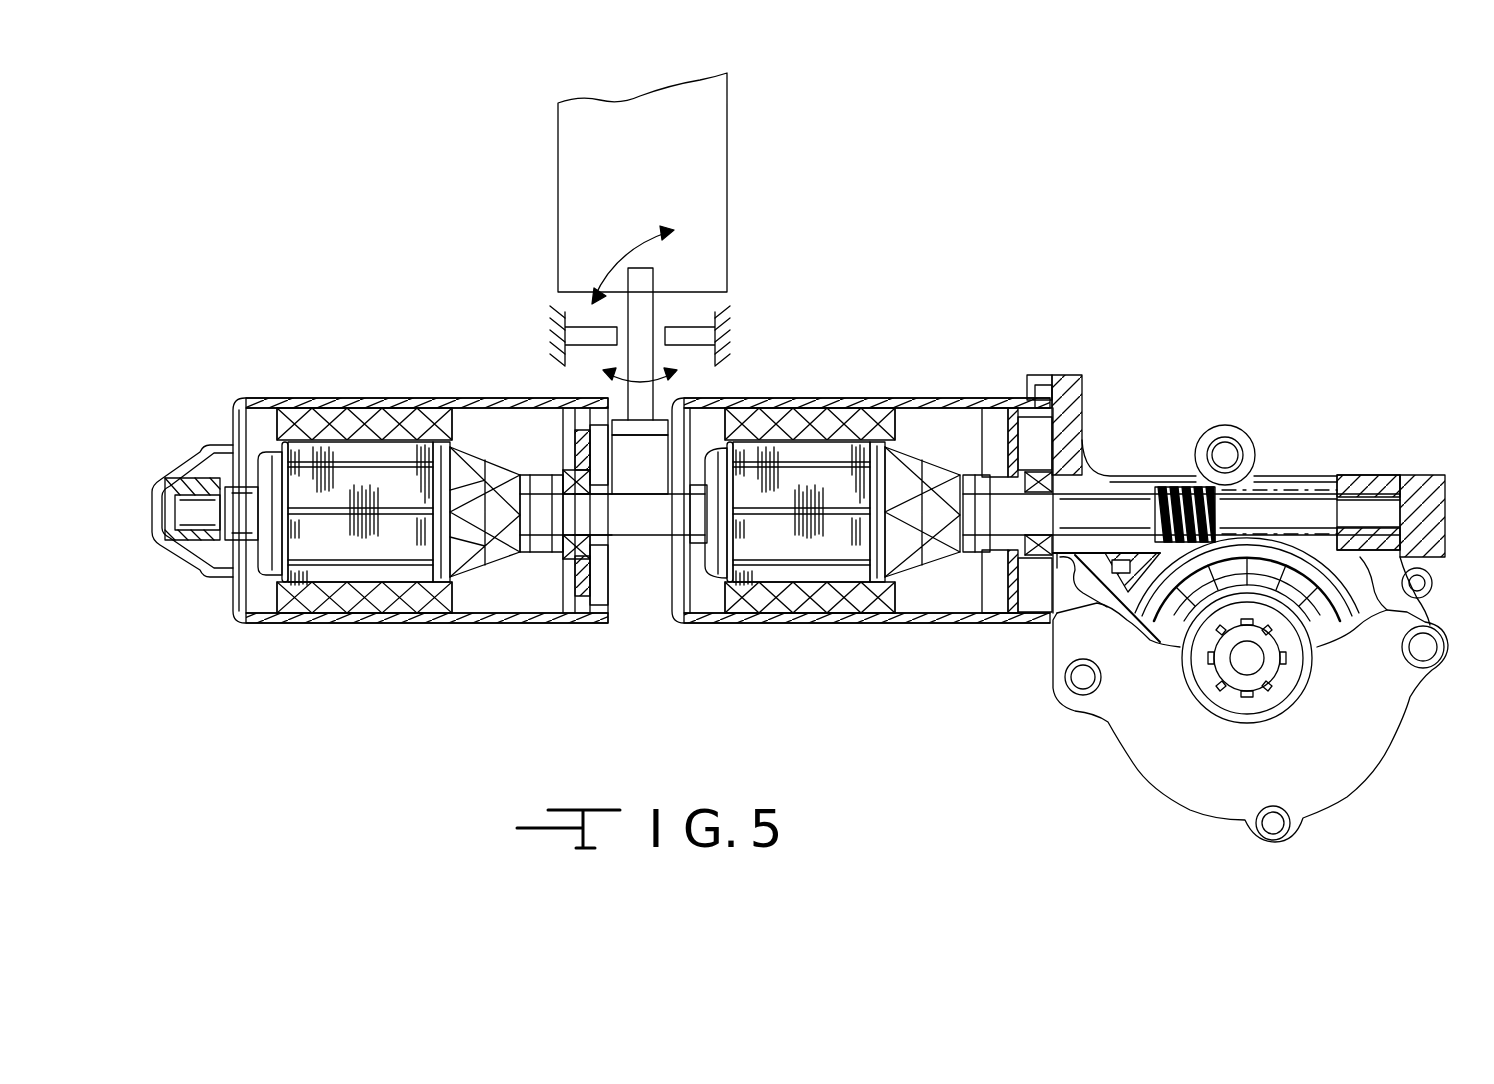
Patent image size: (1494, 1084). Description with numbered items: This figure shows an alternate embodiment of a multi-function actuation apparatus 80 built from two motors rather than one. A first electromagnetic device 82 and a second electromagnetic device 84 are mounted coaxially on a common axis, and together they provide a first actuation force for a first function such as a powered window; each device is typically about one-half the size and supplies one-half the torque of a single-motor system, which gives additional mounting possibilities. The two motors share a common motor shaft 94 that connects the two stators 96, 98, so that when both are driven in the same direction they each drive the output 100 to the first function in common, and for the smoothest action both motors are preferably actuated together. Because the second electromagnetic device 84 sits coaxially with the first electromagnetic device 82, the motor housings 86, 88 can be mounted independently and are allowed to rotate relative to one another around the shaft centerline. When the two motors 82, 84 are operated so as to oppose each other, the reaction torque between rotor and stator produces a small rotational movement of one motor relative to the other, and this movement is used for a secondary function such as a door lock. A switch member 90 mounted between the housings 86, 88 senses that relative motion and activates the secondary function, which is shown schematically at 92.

The multi-function actuation apparatus 80 is at (1085, 220).
The first electromagnetic device 82 is at (390, 624).
The second electromagnetic device 84 is at (820, 624).
The motor housing 86 is at (925, 400).
The motor housing 88 is at (308, 400).
The switch member 90 is at (640, 330).
The secondary function 92 is at (655, 171).
The common motor shaft 94 is at (638, 540).
The stator 96 is at (318, 555).
The stator 98 is at (846, 552).
The output 100 is at (1400, 740).